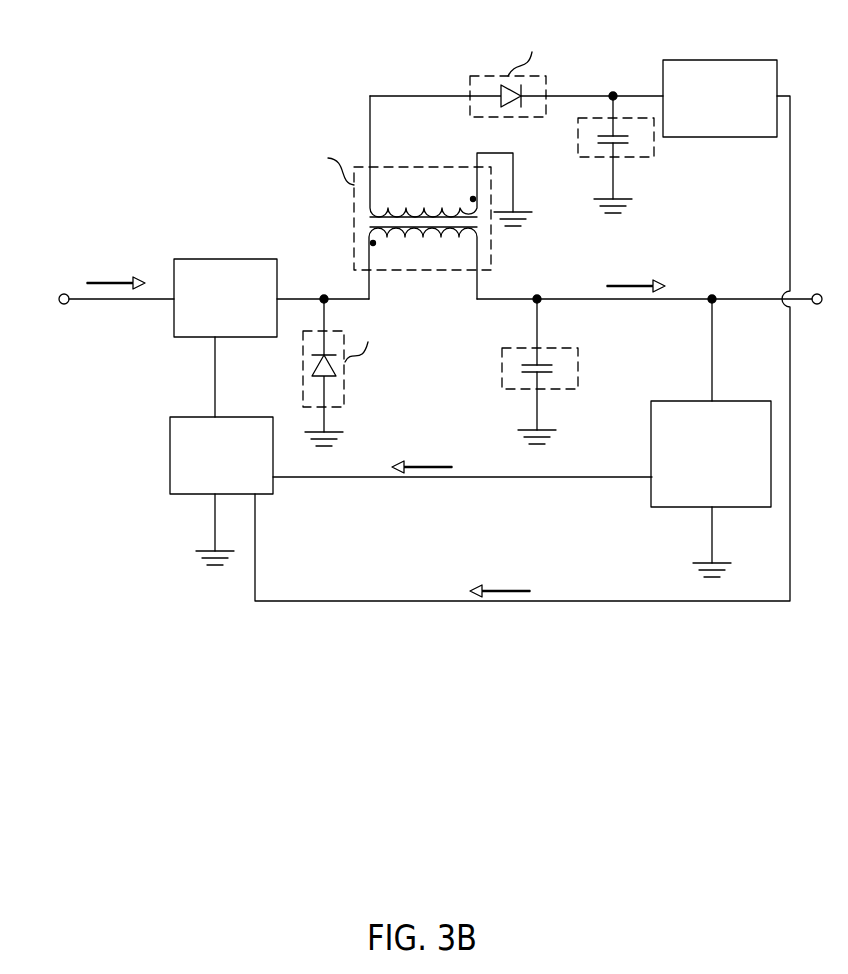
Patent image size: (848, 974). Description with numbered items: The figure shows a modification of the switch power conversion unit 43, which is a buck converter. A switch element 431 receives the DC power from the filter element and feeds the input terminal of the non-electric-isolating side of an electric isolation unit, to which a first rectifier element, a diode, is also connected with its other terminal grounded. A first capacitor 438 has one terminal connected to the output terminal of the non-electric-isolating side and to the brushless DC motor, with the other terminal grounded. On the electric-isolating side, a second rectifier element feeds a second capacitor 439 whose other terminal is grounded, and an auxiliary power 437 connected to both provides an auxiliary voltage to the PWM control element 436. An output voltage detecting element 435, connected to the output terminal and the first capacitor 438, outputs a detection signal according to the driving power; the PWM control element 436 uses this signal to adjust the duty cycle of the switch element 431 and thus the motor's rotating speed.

The switch power conversion unit 43 is at (85, 182).
The switch element 431 is at (183, 339).
The output voltage detecting element 435 is at (684, 509).
The PWM control element 436 is at (173, 496).
The auxiliary power 437 is at (708, 138).
The first capacitor 438 is at (502, 373).
The second capacitor 439 is at (578, 148).